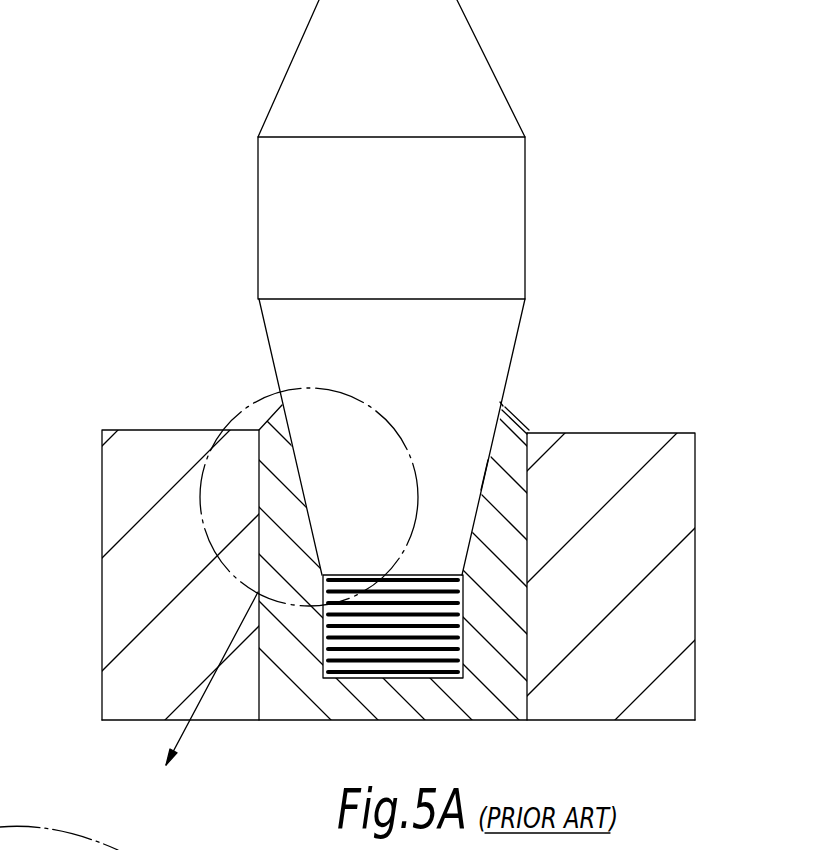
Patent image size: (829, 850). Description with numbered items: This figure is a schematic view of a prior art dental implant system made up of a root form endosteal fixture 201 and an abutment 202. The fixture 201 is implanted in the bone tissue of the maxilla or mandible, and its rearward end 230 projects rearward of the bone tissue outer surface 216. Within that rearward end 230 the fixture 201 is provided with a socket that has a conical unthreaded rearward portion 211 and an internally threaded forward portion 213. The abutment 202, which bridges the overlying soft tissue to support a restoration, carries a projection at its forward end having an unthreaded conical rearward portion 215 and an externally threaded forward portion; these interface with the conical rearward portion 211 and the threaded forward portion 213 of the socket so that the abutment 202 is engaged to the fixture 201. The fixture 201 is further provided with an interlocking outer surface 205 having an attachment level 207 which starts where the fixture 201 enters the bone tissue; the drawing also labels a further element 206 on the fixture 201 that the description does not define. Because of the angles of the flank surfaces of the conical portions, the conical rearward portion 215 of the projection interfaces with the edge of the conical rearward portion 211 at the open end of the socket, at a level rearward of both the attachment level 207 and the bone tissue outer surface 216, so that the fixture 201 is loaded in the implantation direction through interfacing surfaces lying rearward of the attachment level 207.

The root form endosteal fixture 201 is at (243, 568).
The abutment 202 is at (435, 287).
The interlocking outer surface 205 is at (441, 486).
The insert bottom portion 206 is at (500, 673).
The attachment level 207 is at (532, 432).
The conical unthreaded rearward portion 211 is at (483, 483).
The internally threaded forward portion 213 is at (322, 678).
The unthreaded conical rearward portion 215 is at (270, 350).
The bone tissue outer surface 216 is at (632, 433).
The rearward end 230 is at (505, 407).